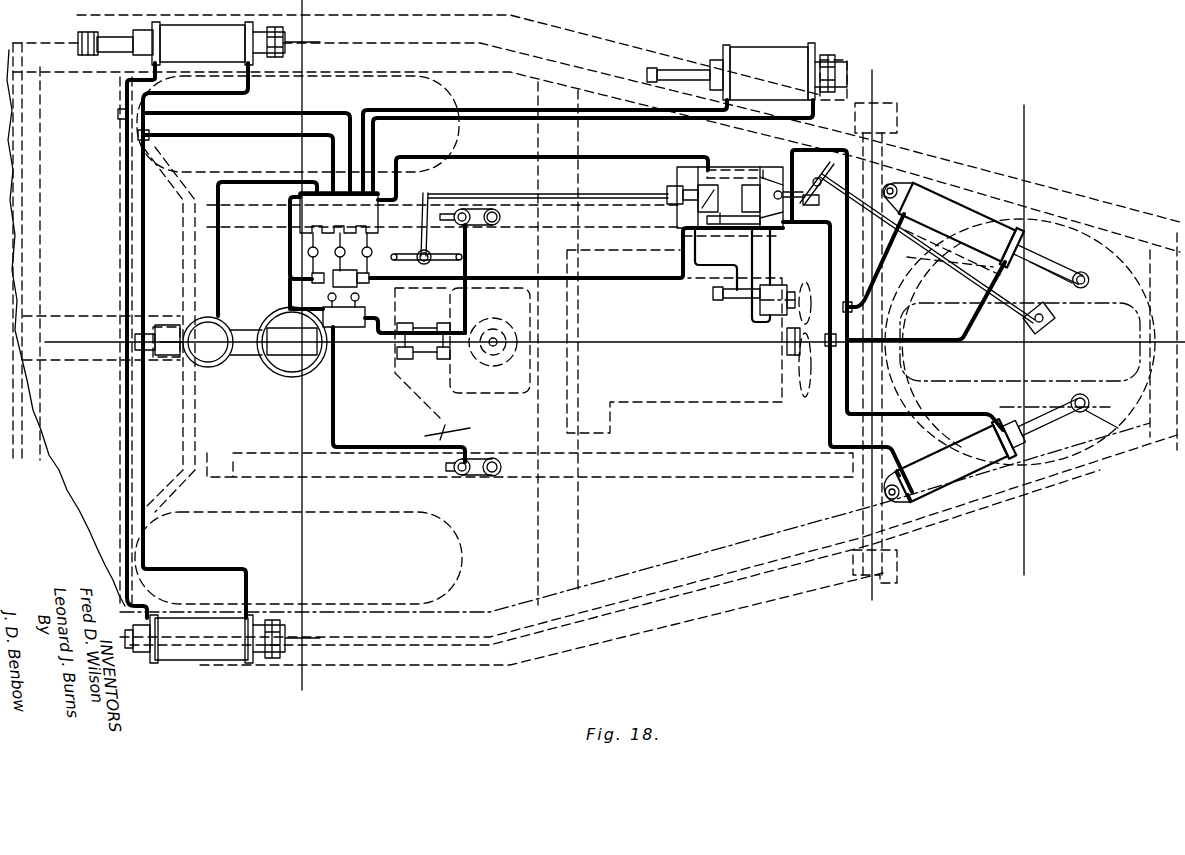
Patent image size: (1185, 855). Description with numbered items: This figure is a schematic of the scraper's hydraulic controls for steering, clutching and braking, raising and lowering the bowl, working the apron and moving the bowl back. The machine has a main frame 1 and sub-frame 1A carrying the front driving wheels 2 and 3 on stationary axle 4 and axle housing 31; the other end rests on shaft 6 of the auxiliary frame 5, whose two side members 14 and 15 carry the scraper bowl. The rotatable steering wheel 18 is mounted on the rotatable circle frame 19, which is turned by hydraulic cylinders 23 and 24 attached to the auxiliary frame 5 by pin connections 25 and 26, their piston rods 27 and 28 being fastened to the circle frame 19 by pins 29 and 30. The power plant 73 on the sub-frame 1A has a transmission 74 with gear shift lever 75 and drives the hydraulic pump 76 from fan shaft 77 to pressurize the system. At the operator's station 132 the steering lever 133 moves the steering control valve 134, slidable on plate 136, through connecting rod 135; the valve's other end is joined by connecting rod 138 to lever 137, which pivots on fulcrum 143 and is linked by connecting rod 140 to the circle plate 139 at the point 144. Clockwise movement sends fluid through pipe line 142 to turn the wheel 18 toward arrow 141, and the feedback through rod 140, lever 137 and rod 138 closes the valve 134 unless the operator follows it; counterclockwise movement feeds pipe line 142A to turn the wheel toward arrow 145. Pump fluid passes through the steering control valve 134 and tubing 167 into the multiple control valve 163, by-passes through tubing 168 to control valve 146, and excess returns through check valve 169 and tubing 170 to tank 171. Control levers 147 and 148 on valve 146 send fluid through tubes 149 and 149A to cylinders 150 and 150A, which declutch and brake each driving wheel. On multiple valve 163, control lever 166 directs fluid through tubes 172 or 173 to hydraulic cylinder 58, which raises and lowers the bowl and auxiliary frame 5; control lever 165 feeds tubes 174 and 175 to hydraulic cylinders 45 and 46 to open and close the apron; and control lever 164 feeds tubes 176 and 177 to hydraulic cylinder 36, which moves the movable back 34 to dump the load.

The main frame 1 is at (712, 594).
The sub-frame 1A is at (618, 470).
The front driving wheel 2 is at (352, 561).
The front driving wheel 3 is at (368, 89).
The stationary axle 4 is at (305, 670).
The auxiliary frame 5 is at (650, 578).
The shaft 6 is at (882, 583).
The side member 14 is at (714, 565).
The side member 15 is at (612, 88).
The rotatable steering wheel 18 is at (1085, 360).
The rotatable circle frame 19 is at (916, 266).
The hydraulic cylinder 23 is at (945, 492).
The hydraulic cylinder 24 is at (950, 205).
The pin connection 25 is at (900, 500).
The pin connection 26 is at (898, 185).
The piston rod 27 is at (1084, 410).
The piston rod 28 is at (1040, 230).
The pin 29 is at (1086, 410).
The pin 30 is at (1086, 232).
The axle housing 31 is at (432, 433).
The movable back 34 is at (182, 275).
The hydraulic cylinder 36 is at (262, 360).
The hydraulic cylinder 45 is at (210, 660).
The hydraulic cylinder 46 is at (185, 33).
The hydraulic cylinder 58 is at (768, 52).
The power plant 73 is at (494, 319).
The transmission 74 is at (502, 388).
The gear shift lever 75 is at (498, 330).
The hydraulic pump 76 is at (784, 286).
The fan shaft 77 is at (788, 346).
The operator's station 132 is at (422, 353).
The steering lever 133 is at (416, 252).
The steering control valve 134 is at (186, 94).
The connecting rod 135 is at (592, 195).
The plate 136 is at (684, 220).
The lever 137 is at (790, 156).
The connecting rod 138 is at (810, 198).
The circle plate 139 is at (1086, 283).
The connecting rod 140 is at (1046, 279).
The arrow 141 is at (1100, 232).
The pipe line 142 is at (788, 225).
The pipe line 142A is at (918, 304).
The fulcrum 143 is at (856, 168).
The attachment point 144 is at (1060, 320).
The arrow 145 is at (1113, 427).
The control valve 146 is at (345, 336).
The control lever 147 is at (322, 316).
The control lever 148 is at (369, 299).
The tube 149 is at (338, 418).
The tube 149A is at (468, 302).
The cylinder 150 is at (480, 472).
The cylinder 150A is at (495, 222).
The multiple control valve 163 is at (339, 212).
The control lever 164 is at (313, 253).
The control lever 165 is at (340, 252).
The control lever 166 is at (368, 253).
The tubing 167 is at (634, 160).
The tubing 168 is at (286, 262).
The check valve 169 is at (334, 284).
The tubing 170 is at (486, 274).
The tank 171 is at (674, 205).
The tube 172 is at (523, 120).
The tube 173 is at (525, 110).
The tube 174 is at (250, 135).
The tube 175 is at (122, 97).
The tube 176 is at (288, 195).
The tube 177 is at (222, 256).